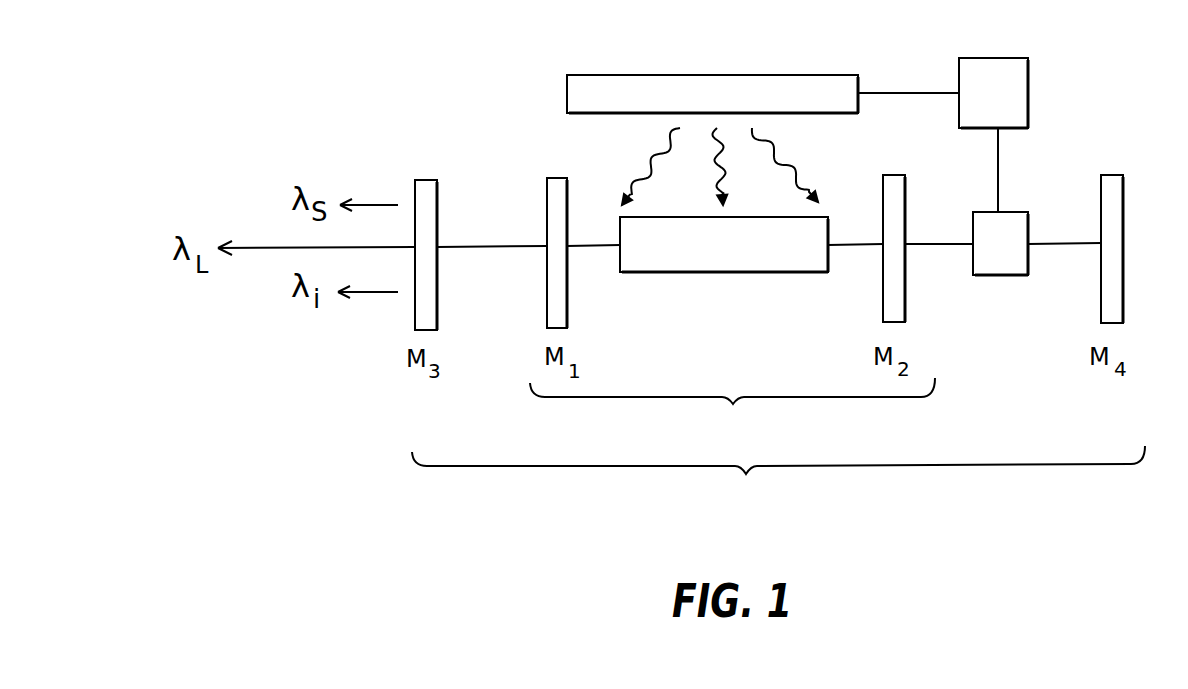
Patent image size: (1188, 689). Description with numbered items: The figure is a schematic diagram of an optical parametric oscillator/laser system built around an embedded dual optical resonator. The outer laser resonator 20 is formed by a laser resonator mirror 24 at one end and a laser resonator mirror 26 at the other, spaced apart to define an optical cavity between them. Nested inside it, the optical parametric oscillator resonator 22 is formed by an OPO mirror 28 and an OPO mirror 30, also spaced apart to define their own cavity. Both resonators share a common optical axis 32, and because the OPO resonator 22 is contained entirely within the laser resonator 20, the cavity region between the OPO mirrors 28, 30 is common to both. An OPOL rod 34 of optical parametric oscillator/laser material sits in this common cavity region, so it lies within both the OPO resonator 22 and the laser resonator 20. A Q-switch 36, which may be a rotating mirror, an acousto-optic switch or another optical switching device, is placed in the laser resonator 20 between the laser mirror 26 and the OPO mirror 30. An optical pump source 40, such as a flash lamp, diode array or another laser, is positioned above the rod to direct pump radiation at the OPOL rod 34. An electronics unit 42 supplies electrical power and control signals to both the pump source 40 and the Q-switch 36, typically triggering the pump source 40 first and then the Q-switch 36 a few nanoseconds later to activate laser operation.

The laser resonator 20 is at (778, 477).
The optical parametric oscillator resonator 22 is at (732, 407).
The laser resonator mirror 24 is at (426, 180).
The laser resonator mirror 26 is at (1108, 175).
The OPO mirror 28 is at (552, 178).
The OPO mirror 30 is at (894, 175).
The common optical axis 32 is at (497, 245).
The OPOL rod 34 is at (672, 272).
The Q-switch 36 is at (1003, 275).
The optical pump source 40 is at (668, 75).
The electronics unit 42 is at (1008, 58).